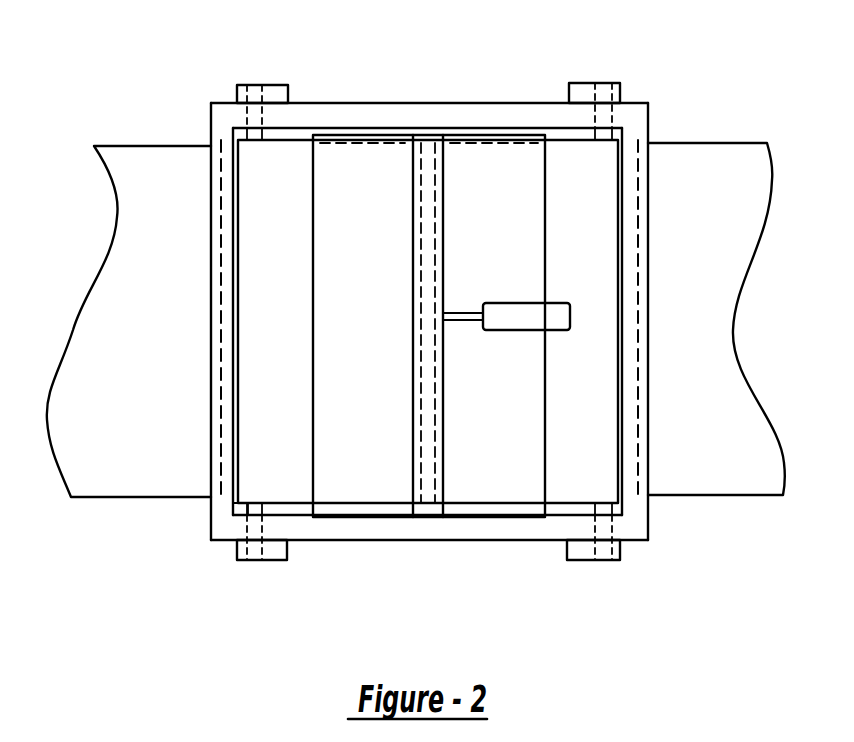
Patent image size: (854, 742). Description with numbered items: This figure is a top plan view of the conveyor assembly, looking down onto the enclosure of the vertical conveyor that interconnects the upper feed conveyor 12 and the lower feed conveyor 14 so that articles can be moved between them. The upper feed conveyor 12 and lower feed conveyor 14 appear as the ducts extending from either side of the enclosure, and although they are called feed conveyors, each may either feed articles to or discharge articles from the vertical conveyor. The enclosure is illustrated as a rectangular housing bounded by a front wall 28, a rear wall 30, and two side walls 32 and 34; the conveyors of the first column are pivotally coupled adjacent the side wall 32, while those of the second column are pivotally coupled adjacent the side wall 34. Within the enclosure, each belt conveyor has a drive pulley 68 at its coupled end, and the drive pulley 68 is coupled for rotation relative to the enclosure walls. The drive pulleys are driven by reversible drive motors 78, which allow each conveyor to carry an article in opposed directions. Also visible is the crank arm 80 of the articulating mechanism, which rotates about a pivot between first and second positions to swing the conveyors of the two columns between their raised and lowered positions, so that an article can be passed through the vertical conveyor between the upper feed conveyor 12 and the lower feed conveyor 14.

The upper feed conveyor 12 is at (708, 332).
The lower feed conveyor 14 is at (155, 323).
The front wall 28 is at (453, 115).
The rear wall 30 is at (452, 528).
The side wall 32 is at (632, 132).
The side wall 34 is at (220, 127).
The drive pulley 68 is at (233, 508).
The reversible drive motor 78 is at (262, 98).
The crank arm 80 is at (308, 490).